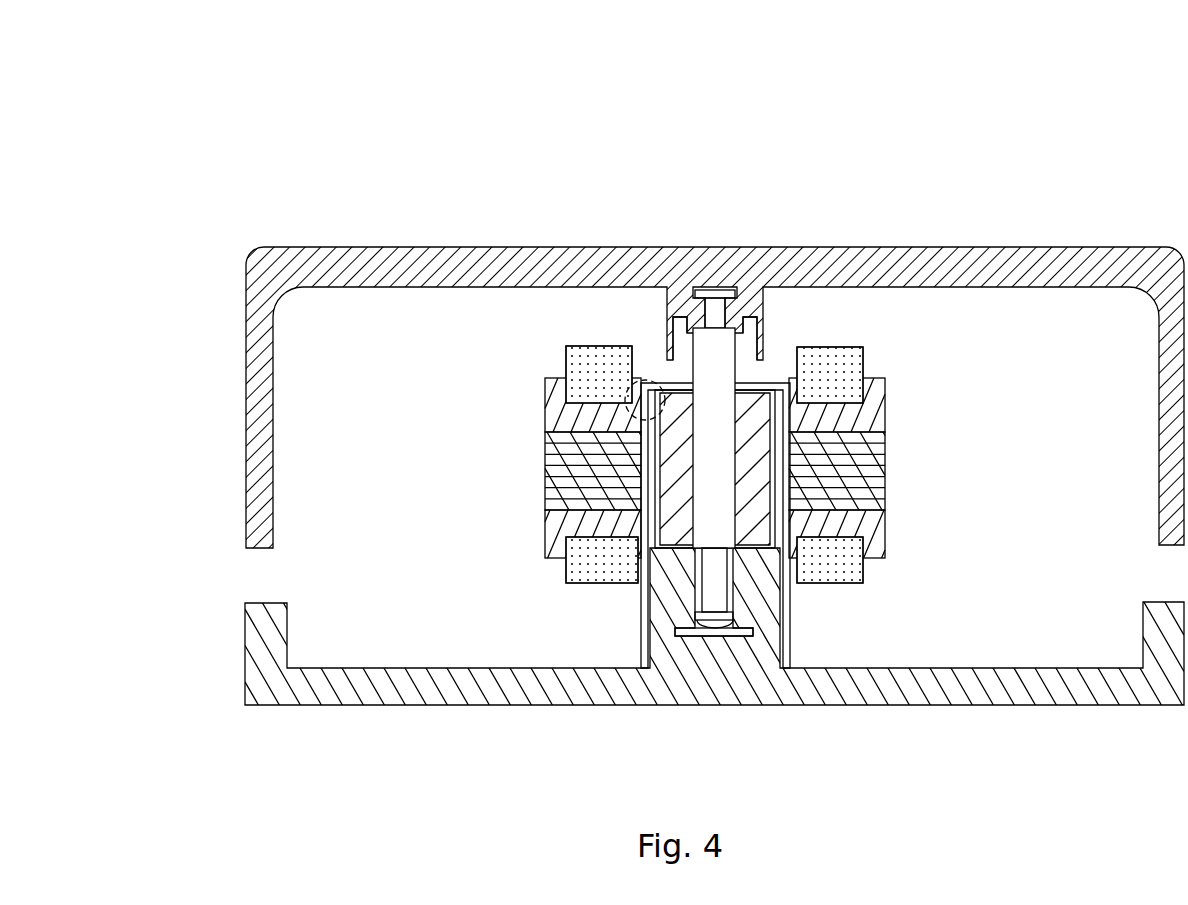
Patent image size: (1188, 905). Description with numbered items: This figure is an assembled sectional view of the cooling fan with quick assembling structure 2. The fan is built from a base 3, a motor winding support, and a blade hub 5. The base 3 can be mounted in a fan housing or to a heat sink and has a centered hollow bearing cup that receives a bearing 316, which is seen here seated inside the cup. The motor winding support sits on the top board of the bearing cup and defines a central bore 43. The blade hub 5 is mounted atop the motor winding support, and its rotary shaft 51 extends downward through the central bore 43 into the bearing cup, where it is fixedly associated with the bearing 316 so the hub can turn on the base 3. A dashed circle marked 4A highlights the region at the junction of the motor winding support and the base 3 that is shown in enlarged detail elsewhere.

The cooling fan with quick assembling structure 2 is at (222, 152).
The base 3 is at (1160, 673).
The blade hub 5 is at (402, 265).
The detail region 4A is at (648, 385).
The central bore 43 is at (688, 345).
The rotary shaft 51 is at (713, 363).
The bearing 316 is at (752, 408).